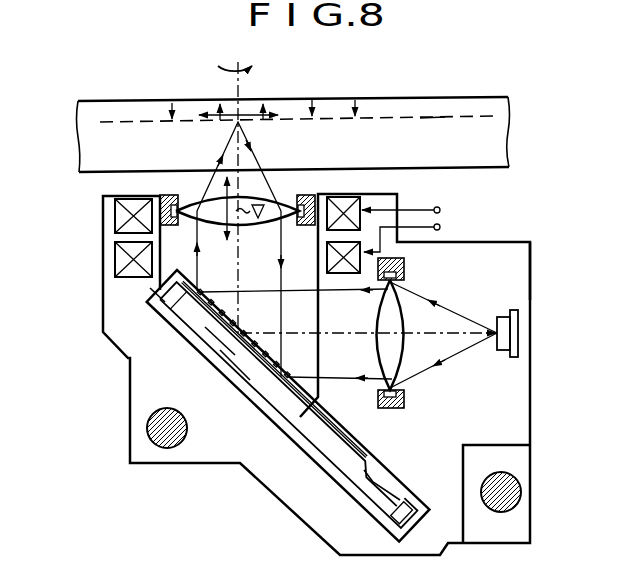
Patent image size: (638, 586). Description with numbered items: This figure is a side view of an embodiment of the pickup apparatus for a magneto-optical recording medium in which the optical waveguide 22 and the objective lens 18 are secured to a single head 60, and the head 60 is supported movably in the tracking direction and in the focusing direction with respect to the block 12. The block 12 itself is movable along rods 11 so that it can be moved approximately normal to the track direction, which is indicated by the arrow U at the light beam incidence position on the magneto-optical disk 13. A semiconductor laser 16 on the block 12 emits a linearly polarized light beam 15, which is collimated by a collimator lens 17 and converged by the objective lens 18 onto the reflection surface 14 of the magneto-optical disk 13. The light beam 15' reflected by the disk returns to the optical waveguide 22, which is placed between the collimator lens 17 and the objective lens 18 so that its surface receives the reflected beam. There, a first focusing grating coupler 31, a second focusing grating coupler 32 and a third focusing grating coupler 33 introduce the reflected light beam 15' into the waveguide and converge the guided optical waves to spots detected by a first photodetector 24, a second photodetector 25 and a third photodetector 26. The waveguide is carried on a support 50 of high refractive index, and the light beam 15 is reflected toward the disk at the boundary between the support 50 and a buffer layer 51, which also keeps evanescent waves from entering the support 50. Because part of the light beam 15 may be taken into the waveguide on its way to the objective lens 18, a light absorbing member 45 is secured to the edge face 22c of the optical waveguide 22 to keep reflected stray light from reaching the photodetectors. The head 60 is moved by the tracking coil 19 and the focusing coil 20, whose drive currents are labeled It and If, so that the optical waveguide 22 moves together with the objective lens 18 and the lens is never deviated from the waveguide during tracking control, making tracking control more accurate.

The rods 11 is at (167, 447).
The block 12 is at (541, 299).
The magneto-optical disk 13 is at (441, 94).
The reflection surface 14 is at (441, 118).
The light beam 15 is at (343, 255).
The reflected light beam 15' is at (319, 357).
The semiconductor laser 16 is at (506, 317).
The collimator lens 17 is at (397, 357).
The objective lens 18 is at (191, 195).
The tracking coil 19 is at (340, 196).
The focusing coil 20 is at (341, 275).
The optical waveguide 22 is at (272, 421).
The edge face 22c is at (150, 288).
The first photodetector 24 is at (443, 449).
The second photodetector 25 is at (443, 449).
The third photodetector 26 is at (397, 470).
The first focusing grating coupler 31 is at (129, 380).
The second focusing grating coupler 32 is at (129, 380).
The third focusing grating coupler 33 is at (203, 330).
The light absorbing member 45 is at (155, 303).
The support 50 is at (287, 413).
The buffer layer 51 is at (238, 382).
The head 60 is at (318, 355).
The arrow U is at (258, 97).
The tracking current It is at (412, 210).
The focusing current If is at (413, 234).